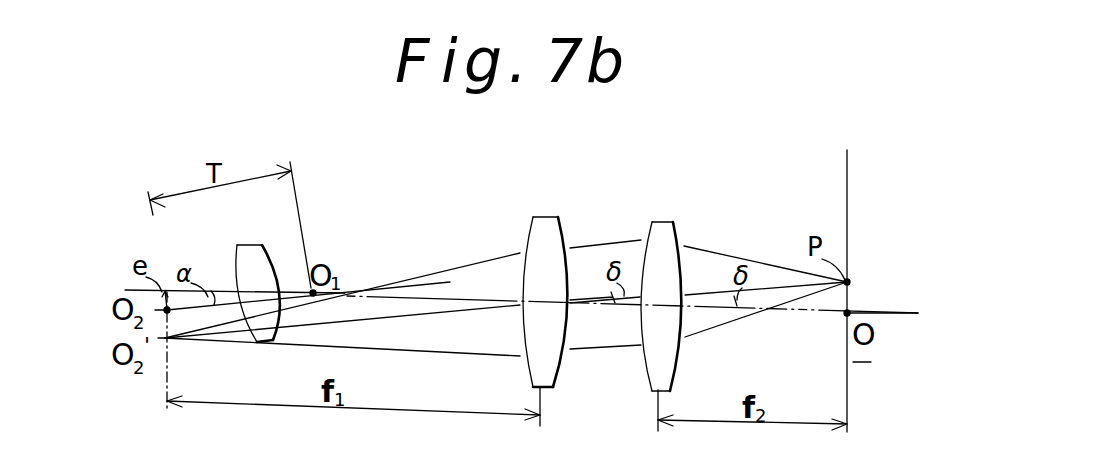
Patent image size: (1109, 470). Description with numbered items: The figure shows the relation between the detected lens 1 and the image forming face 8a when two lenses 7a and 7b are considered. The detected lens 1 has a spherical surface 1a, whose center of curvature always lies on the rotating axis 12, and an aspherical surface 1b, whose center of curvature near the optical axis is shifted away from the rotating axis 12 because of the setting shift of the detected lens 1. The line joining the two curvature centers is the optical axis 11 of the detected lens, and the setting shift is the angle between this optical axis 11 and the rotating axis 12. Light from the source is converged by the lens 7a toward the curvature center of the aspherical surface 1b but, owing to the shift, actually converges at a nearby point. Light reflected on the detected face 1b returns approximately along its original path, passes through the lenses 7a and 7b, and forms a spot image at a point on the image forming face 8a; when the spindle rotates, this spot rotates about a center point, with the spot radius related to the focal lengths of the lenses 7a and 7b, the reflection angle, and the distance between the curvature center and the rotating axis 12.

The detected lens 1 is at (236, 268).
The spherical surface 1a is at (235, 266).
The aspherical surface 1b is at (274, 266).
The lens 7a is at (546, 224).
The lens 7b is at (663, 230).
The image forming face 8a is at (849, 178).
The optical axis 11 is at (423, 284).
The rotating axis 12 is at (893, 313).